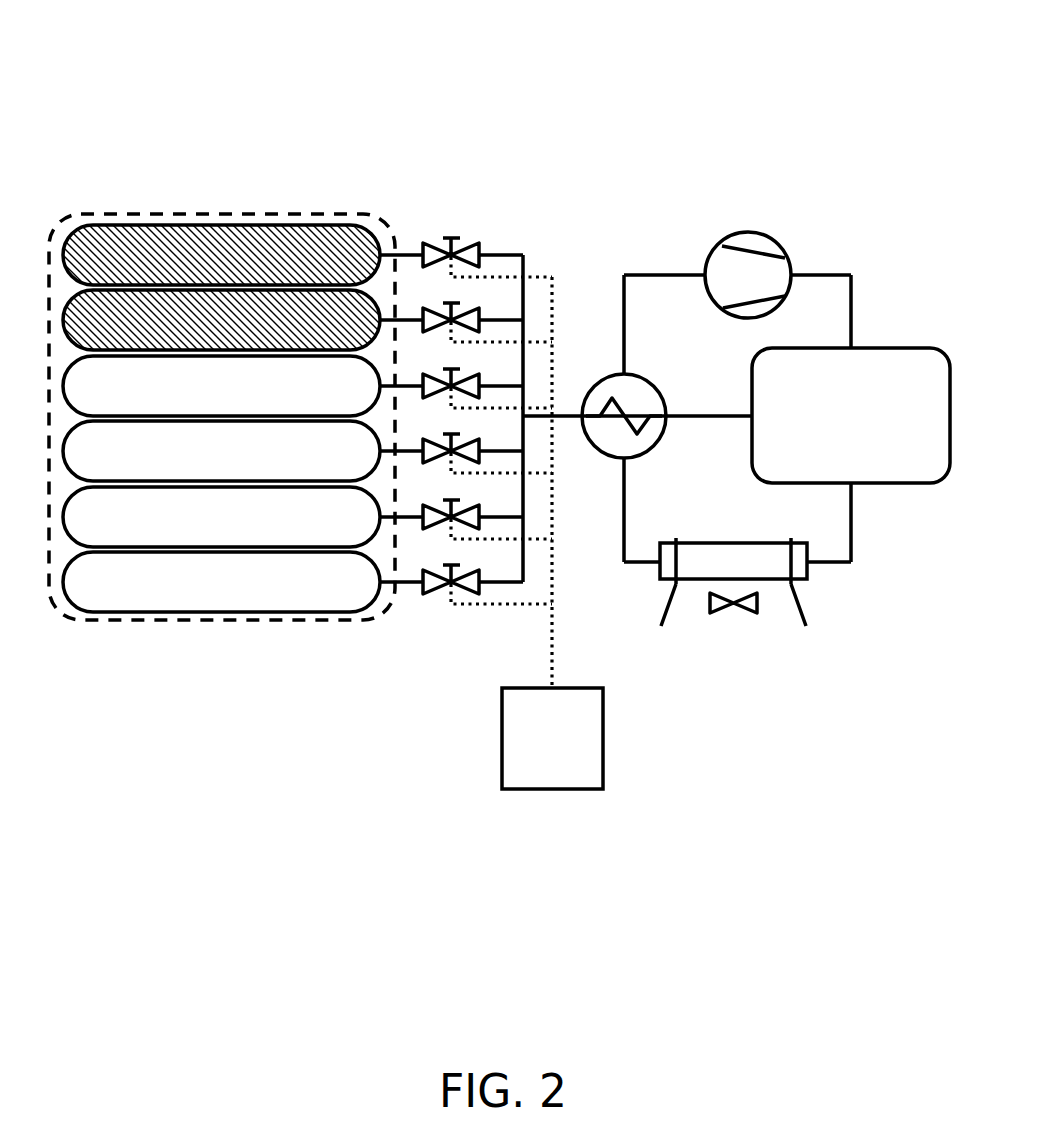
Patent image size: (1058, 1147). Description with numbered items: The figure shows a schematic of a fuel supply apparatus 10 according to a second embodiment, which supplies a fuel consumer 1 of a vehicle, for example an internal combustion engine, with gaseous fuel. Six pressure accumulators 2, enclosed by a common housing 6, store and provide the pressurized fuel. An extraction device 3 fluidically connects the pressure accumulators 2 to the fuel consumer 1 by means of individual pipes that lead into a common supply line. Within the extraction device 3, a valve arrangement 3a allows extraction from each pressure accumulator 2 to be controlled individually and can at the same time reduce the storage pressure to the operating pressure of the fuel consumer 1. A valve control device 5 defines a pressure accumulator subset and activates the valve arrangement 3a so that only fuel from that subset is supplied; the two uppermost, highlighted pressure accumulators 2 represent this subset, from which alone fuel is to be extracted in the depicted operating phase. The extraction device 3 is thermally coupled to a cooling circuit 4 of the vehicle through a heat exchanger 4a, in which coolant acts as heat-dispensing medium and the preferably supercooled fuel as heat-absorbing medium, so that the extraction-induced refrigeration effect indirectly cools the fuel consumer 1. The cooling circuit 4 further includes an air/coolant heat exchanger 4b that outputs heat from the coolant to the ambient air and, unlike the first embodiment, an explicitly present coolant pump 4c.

The apparatus 10 is at (514, 41).
The fuel consumer 1 is at (913, 367).
The pressure accumulators 2 is at (212, 172).
The extraction device 3 is at (560, 200).
The valve arrangement 3a is at (458, 200).
The cooling circuit 4 is at (654, 273).
The heat exchanger 4a is at (638, 393).
The air/coolant heat exchanger 4b is at (717, 555).
The coolant pump 4c is at (762, 260).
The valve control device 5 is at (573, 735).
The housing 6 is at (203, 622).